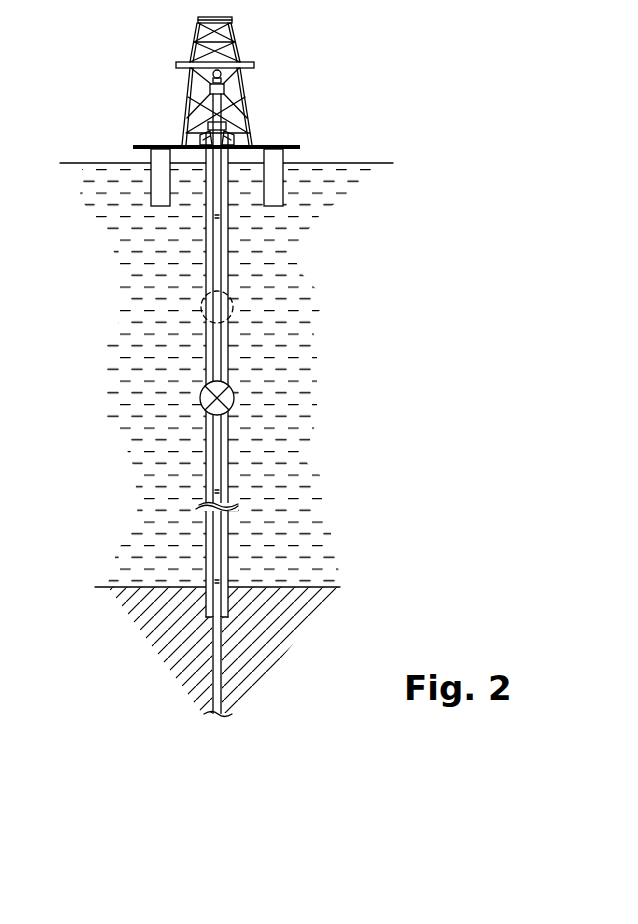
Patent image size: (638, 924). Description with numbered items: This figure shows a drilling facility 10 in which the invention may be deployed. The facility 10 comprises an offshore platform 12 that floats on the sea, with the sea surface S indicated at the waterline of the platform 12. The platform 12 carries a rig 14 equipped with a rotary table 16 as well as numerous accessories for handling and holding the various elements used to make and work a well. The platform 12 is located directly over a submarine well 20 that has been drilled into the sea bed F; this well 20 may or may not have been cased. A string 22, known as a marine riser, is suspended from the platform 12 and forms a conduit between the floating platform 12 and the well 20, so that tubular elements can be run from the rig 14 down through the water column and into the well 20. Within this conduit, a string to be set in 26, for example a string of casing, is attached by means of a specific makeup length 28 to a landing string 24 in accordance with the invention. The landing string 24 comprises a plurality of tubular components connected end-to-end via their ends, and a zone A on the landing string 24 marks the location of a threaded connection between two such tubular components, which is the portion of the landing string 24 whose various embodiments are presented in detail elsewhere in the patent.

The drilling facility 10 is at (405, 138).
The offshore platform 12 is at (253, 43).
The rig 14 is at (246, 102).
The rotary table 16 is at (249, 137).
The submarine well 20 is at (228, 626).
The string 22 is at (230, 433).
The landing string 24 is at (239, 330).
The string to be set in 26 is at (243, 471).
The specific makeup length 28 is at (200, 396).
The zone A is at (202, 302).
The sea surface S is at (94, 163).
The sea bed F is at (323, 587).